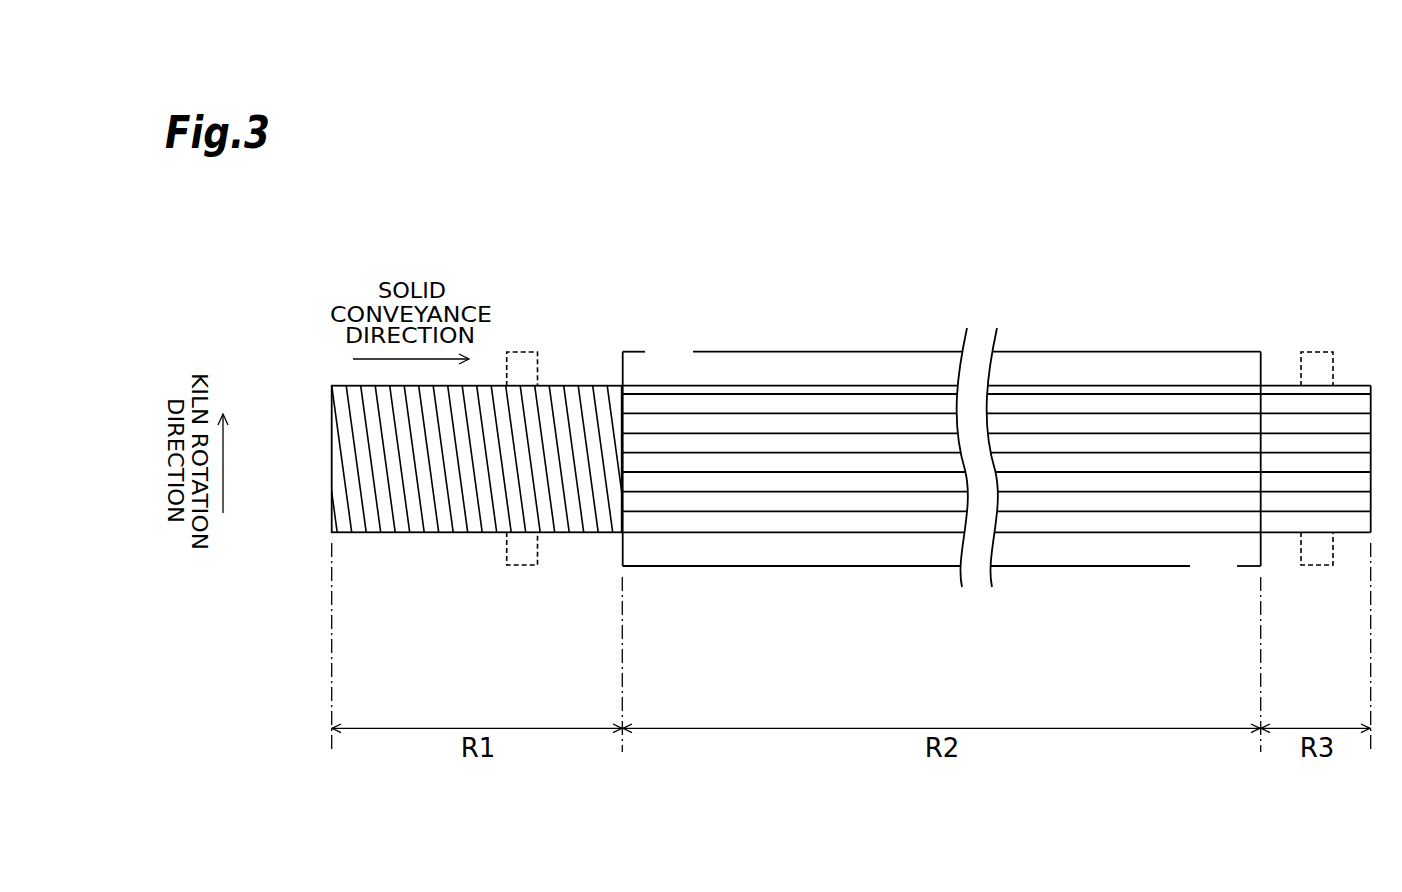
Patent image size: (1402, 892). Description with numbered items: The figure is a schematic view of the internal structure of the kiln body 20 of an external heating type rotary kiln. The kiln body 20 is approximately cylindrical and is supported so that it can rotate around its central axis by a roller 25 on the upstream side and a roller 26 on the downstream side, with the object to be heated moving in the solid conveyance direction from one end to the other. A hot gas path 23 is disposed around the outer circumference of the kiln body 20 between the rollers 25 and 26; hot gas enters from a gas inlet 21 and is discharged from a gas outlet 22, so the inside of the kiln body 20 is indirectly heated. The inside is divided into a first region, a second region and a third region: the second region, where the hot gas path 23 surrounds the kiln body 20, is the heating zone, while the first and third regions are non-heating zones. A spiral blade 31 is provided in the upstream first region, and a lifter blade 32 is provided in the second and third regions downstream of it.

The kiln body 20 is at (331, 438).
The gas inlet 21 is at (1213, 567).
The gas outlet 22 is at (670, 352).
The hot gas path 23 is at (777, 567).
The roller 25 is at (523, 352).
The roller 26 is at (1317, 352).
The spiral blade 31 is at (444, 512).
The lifter blade 32 is at (700, 492).